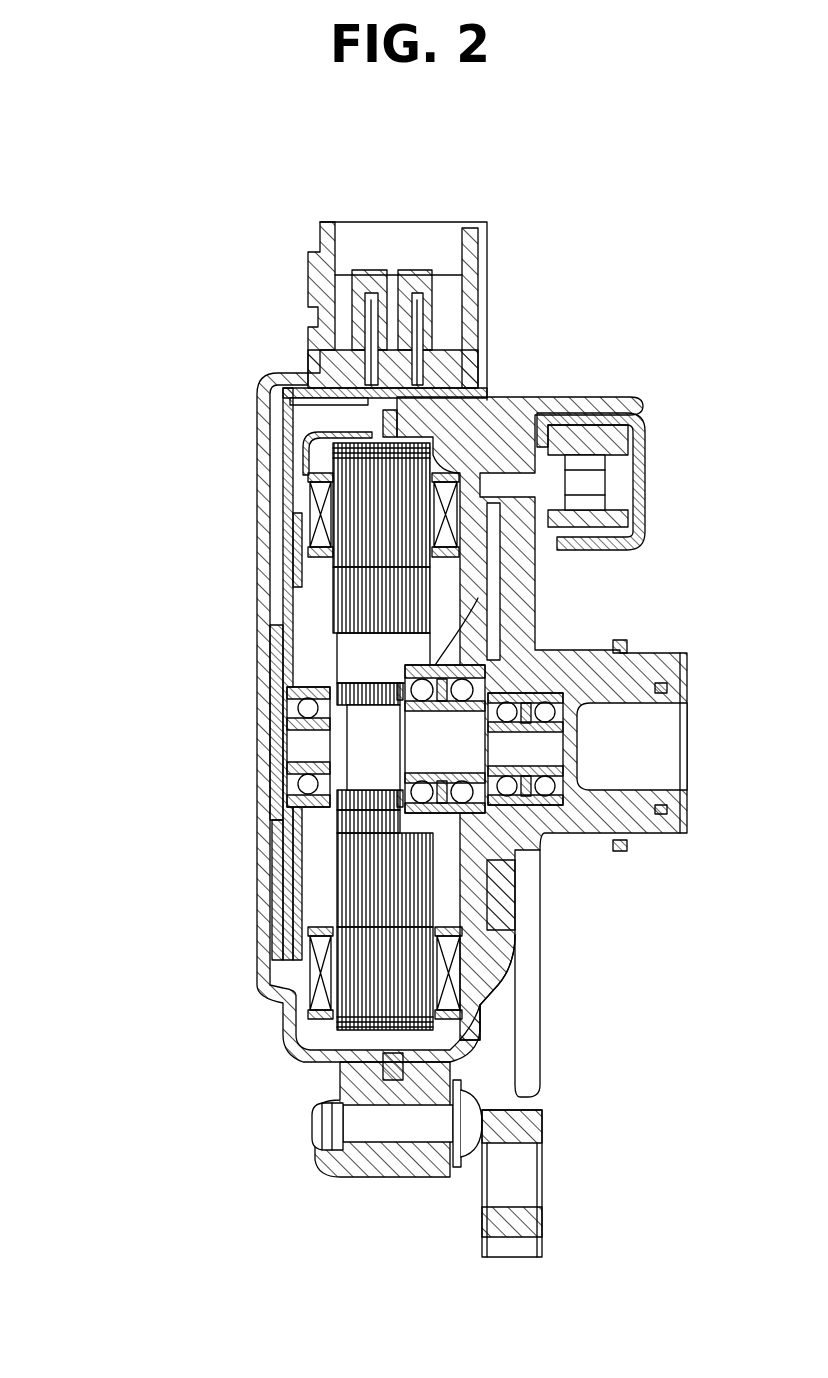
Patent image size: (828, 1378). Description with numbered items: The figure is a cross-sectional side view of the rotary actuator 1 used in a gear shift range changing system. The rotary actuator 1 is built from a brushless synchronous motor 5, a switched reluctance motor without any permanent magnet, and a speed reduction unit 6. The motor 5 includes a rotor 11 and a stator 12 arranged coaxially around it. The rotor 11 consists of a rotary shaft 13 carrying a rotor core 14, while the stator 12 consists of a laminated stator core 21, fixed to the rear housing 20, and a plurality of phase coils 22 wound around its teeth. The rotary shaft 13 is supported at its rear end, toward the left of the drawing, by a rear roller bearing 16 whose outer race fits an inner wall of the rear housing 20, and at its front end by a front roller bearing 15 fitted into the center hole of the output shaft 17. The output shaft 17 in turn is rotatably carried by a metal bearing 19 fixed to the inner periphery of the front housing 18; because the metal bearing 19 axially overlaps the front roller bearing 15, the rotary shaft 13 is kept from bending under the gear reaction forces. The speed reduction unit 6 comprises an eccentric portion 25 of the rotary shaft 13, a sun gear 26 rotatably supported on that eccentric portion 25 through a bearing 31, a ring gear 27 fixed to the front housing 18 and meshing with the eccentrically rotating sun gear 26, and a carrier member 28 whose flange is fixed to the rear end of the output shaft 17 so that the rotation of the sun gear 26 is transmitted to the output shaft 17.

The rotary actuator 1 is at (206, 322).
The brushless synchronous motor 5 is at (88, 458).
The stator 12 is at (145, 443).
The stator core 21 is at (345, 497).
The phase coils 22 is at (330, 520).
The rotor 11 is at (145, 562).
The rotor core 14 is at (345, 597).
The rotary shaft 13 is at (330, 665).
The rear roller bearing 16 is at (363, 712).
The rear housing 20 is at (268, 981).
The bearing 31 is at (538, 614).
The front roller bearing 15 is at (540, 643).
The metal bearing 19 is at (614, 650).
The output shaft 17 is at (582, 797).
The speed reduction unit 6 is at (648, 1047).
The eccentric portion 25 is at (540, 867).
The carrier member 28 is at (540, 913).
The sun gear 26 is at (540, 957).
The ring gear 27 is at (540, 997).
The front housing 18 is at (470, 1050).